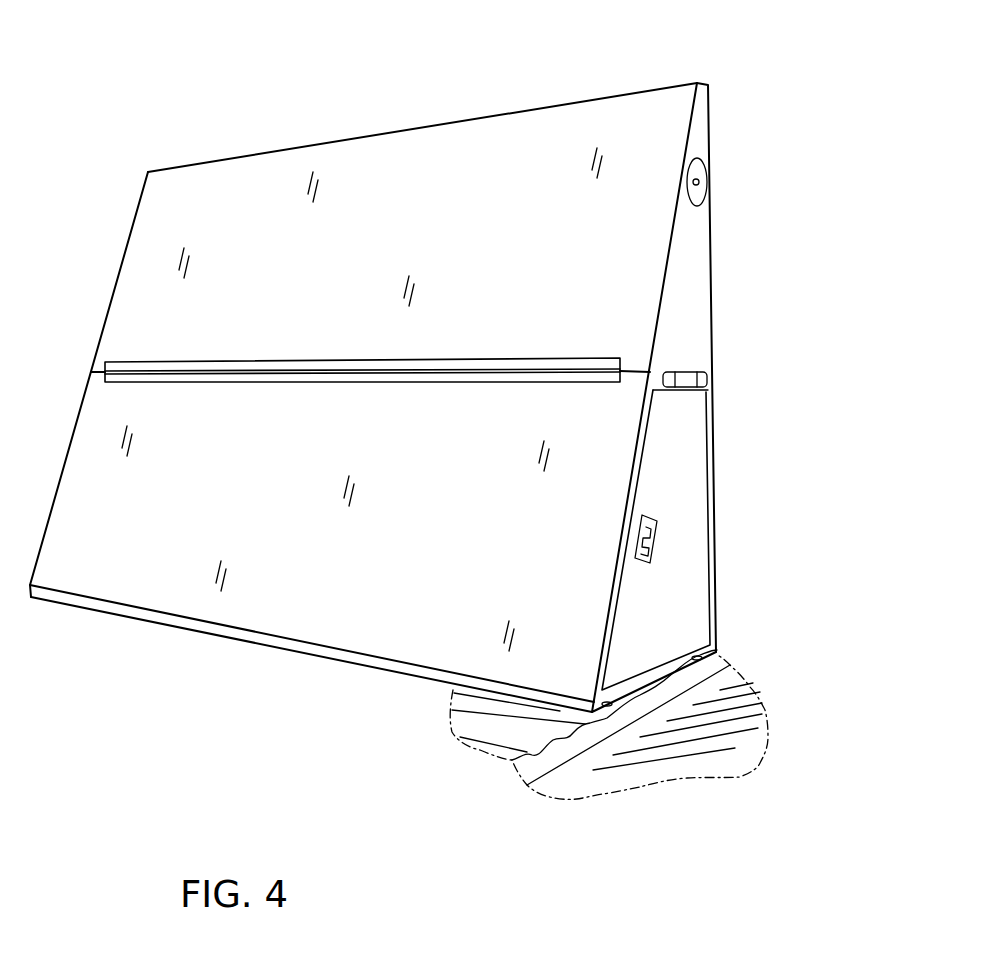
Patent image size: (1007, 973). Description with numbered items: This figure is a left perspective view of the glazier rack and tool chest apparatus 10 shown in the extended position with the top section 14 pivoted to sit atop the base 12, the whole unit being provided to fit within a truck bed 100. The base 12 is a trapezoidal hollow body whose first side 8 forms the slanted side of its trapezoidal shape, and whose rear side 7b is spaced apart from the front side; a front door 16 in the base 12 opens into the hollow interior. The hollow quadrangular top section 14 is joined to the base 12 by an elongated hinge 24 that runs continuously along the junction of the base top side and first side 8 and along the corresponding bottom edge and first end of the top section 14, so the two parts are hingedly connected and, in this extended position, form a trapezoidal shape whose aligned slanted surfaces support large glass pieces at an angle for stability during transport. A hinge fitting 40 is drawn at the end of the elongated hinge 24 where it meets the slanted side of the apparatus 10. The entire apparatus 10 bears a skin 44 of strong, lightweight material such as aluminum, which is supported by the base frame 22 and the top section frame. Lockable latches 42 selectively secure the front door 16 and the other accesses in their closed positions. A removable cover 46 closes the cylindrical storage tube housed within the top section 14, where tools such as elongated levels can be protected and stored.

The glazier rack and tool chest apparatus 10 is at (432, 705).
The top section 14 is at (226, 163).
The rear side 7b is at (144, 190).
The front door 16 is at (674, 423).
The base 12 is at (633, 378).
The elongated hinge 24 is at (340, 362).
The skin 44 is at (655, 226).
The base frame 22 is at (615, 582).
The hinge 40 is at (693, 369).
The first side 8 is at (633, 386).
The removable cover 46 is at (672, 160).
The latches 42 is at (677, 533).
The truck bed 100 is at (565, 761).